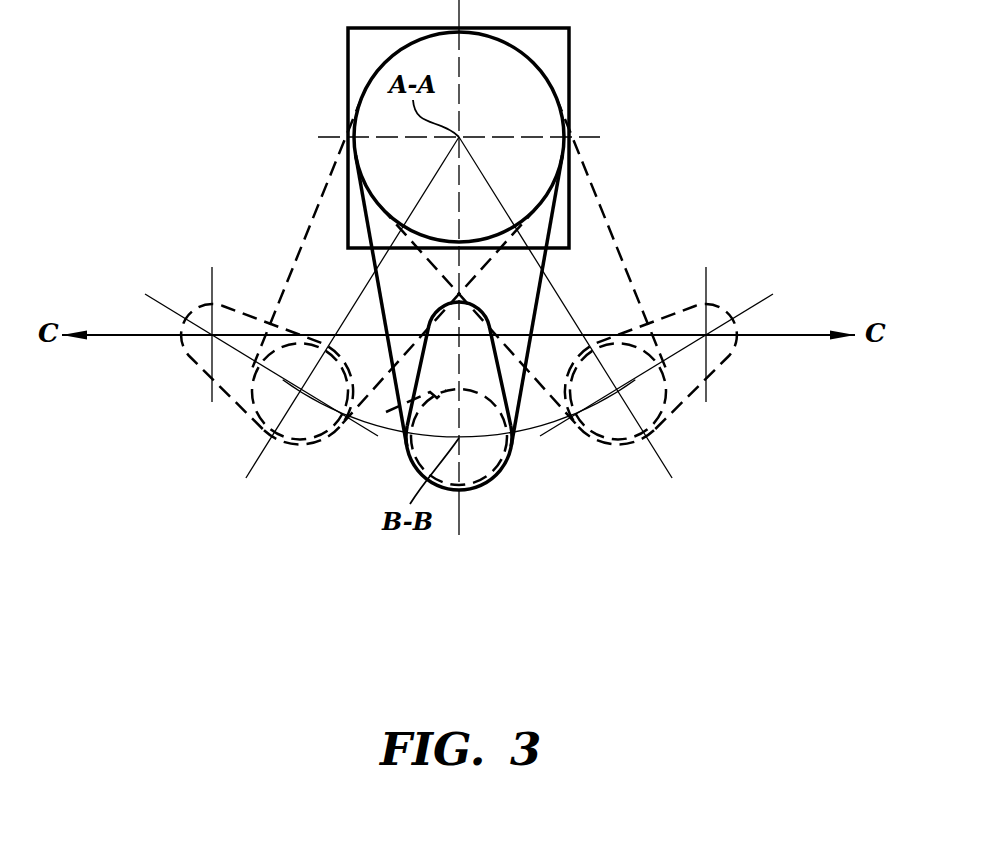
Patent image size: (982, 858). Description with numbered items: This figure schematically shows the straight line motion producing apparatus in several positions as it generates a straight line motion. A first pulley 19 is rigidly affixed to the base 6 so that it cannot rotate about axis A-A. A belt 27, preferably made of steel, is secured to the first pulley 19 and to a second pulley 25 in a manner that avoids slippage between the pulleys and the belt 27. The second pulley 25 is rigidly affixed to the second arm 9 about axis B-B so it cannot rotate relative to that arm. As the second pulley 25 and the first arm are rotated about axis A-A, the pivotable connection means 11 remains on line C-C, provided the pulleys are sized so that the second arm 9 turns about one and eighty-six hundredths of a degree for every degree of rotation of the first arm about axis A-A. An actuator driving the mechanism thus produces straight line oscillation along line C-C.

The base 6 is at (558, 47).
The first pulley 19 is at (520, 98).
The belt 27 is at (527, 318).
The pivotable connection means 11 is at (443, 318).
The second arm 9 is at (508, 465).
The second pulley 25 is at (384, 372).